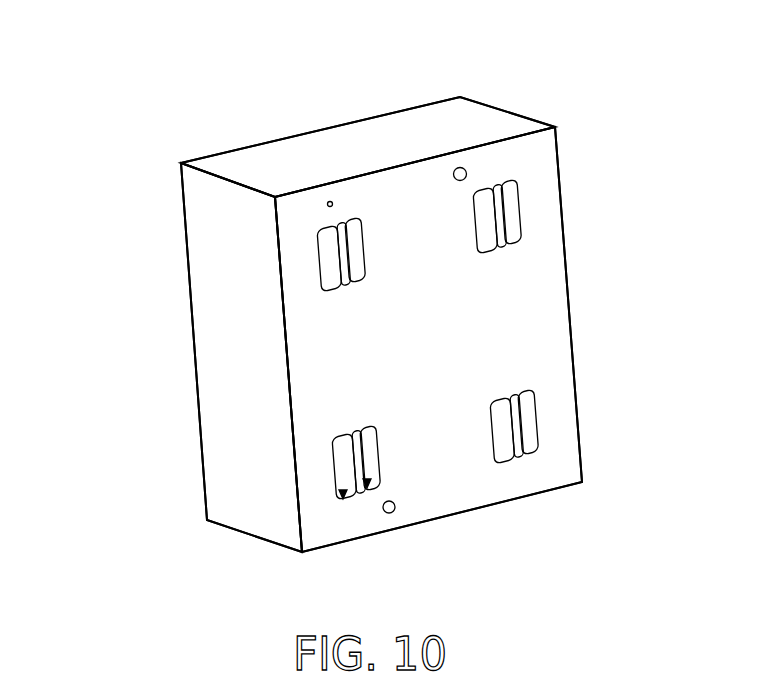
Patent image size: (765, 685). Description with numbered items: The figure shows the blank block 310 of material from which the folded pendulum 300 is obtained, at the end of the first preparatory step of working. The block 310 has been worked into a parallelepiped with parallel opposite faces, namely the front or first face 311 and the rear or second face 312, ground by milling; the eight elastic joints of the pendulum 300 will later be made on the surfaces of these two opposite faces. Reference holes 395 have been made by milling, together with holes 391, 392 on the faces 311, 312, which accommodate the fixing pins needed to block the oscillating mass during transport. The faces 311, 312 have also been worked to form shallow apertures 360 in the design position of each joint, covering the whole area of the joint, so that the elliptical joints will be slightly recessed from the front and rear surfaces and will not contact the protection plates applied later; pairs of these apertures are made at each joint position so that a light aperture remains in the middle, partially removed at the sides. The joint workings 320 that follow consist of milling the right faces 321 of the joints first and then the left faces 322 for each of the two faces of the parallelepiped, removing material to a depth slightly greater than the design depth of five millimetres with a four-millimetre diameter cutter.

The folded pendulum 300 is at (150, 188).
The blank block 310 is at (422, 135).
The front face 311 is at (467, 491).
The rear face 312 is at (220, 478).
The joint working 320 is at (371, 322).
The right faces of the joints 321 is at (517, 198).
The left faces of the joints 322 is at (476, 245).
The shallow apertures 360 is at (367, 487).
The hole 391 is at (467, 173).
The hole 392 is at (392, 513).
The reference holes 395 is at (331, 200).